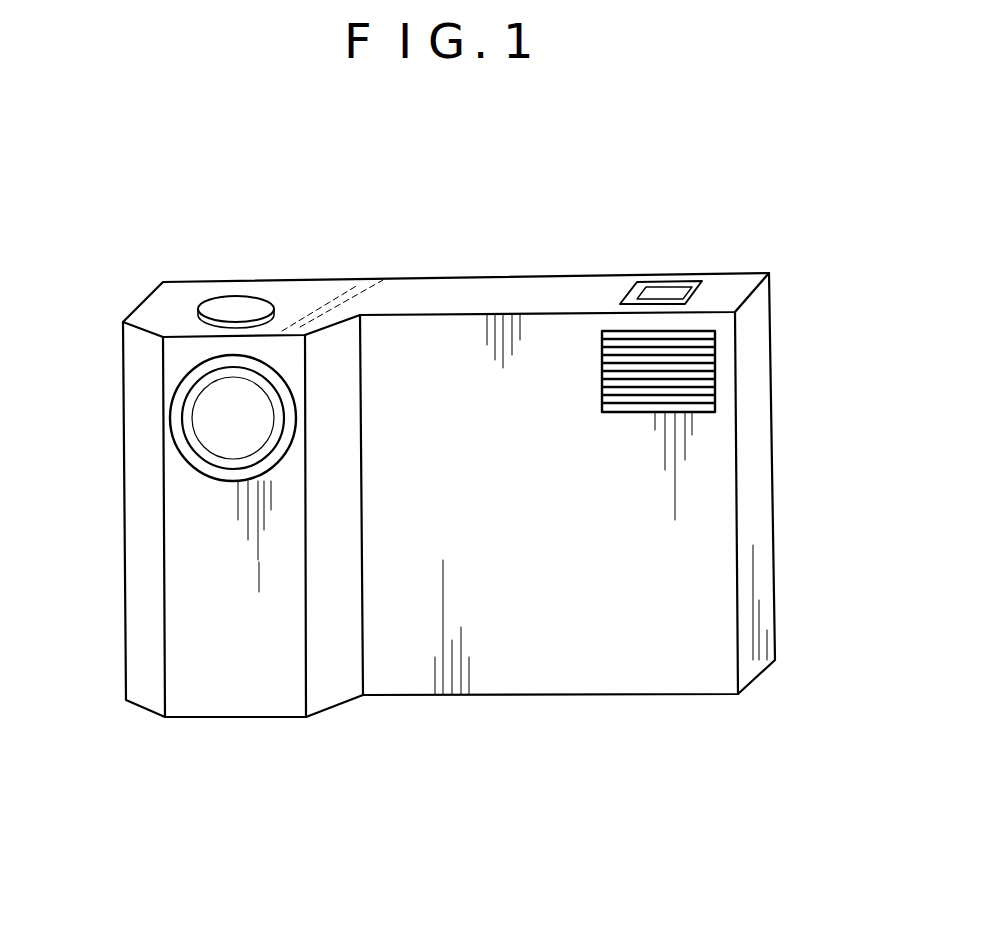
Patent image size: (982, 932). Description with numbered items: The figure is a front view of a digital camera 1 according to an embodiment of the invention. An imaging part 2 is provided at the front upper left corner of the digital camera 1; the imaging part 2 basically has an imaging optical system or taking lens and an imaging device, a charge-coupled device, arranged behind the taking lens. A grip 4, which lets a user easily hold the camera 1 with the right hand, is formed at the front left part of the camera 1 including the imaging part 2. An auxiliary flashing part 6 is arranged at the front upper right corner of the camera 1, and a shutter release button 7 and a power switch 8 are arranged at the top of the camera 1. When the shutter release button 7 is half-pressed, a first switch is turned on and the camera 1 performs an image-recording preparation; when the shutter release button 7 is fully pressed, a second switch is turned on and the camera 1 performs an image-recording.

The digital camera 1 is at (298, 252).
The imaging part 2 is at (183, 475).
The grip 4 is at (215, 701).
The auxiliary flashing part 6 is at (742, 368).
The shutter release button 7 is at (228, 307).
The power switch 8 is at (667, 287).